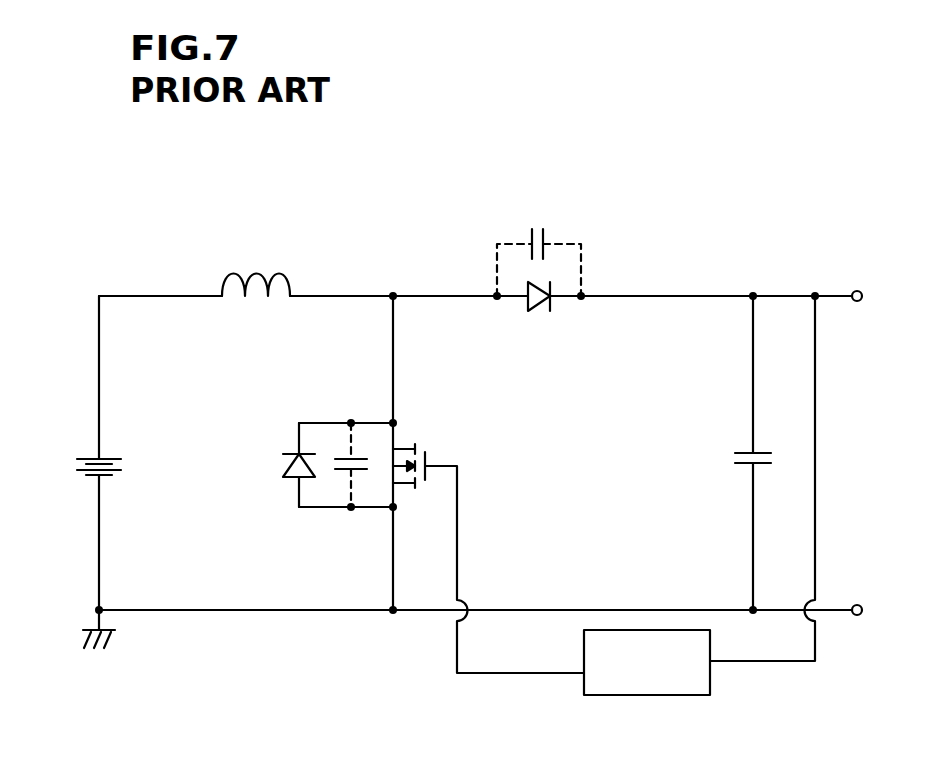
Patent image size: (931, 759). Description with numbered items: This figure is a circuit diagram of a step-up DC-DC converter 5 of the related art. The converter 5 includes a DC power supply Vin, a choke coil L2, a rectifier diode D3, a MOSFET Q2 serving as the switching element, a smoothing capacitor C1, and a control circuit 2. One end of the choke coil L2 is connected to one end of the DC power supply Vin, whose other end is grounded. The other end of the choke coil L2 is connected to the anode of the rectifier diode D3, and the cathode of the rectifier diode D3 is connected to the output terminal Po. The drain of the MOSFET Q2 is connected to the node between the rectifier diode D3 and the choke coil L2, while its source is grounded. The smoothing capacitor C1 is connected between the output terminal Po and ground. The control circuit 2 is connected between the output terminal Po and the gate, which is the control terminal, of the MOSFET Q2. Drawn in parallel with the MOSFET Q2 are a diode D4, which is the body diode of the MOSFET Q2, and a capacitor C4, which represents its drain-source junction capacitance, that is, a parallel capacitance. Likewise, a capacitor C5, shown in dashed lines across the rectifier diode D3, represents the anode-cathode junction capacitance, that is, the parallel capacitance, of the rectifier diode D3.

The DC-DC converter 5 is at (778, 222).
The control circuit 2 is at (711, 678).
The choke coil L2 is at (256, 269).
The rectifier diode D3 is at (534, 313).
The capacitor C5 is at (534, 253).
The diode D4 is at (295, 447).
The capacitor C4 is at (349, 447).
The MOSFET Q2 is at (488, 542).
The smoothing capacitor C1 is at (765, 453).
The DC power supply Vin is at (79, 453).
The output terminal Po is at (856, 439).